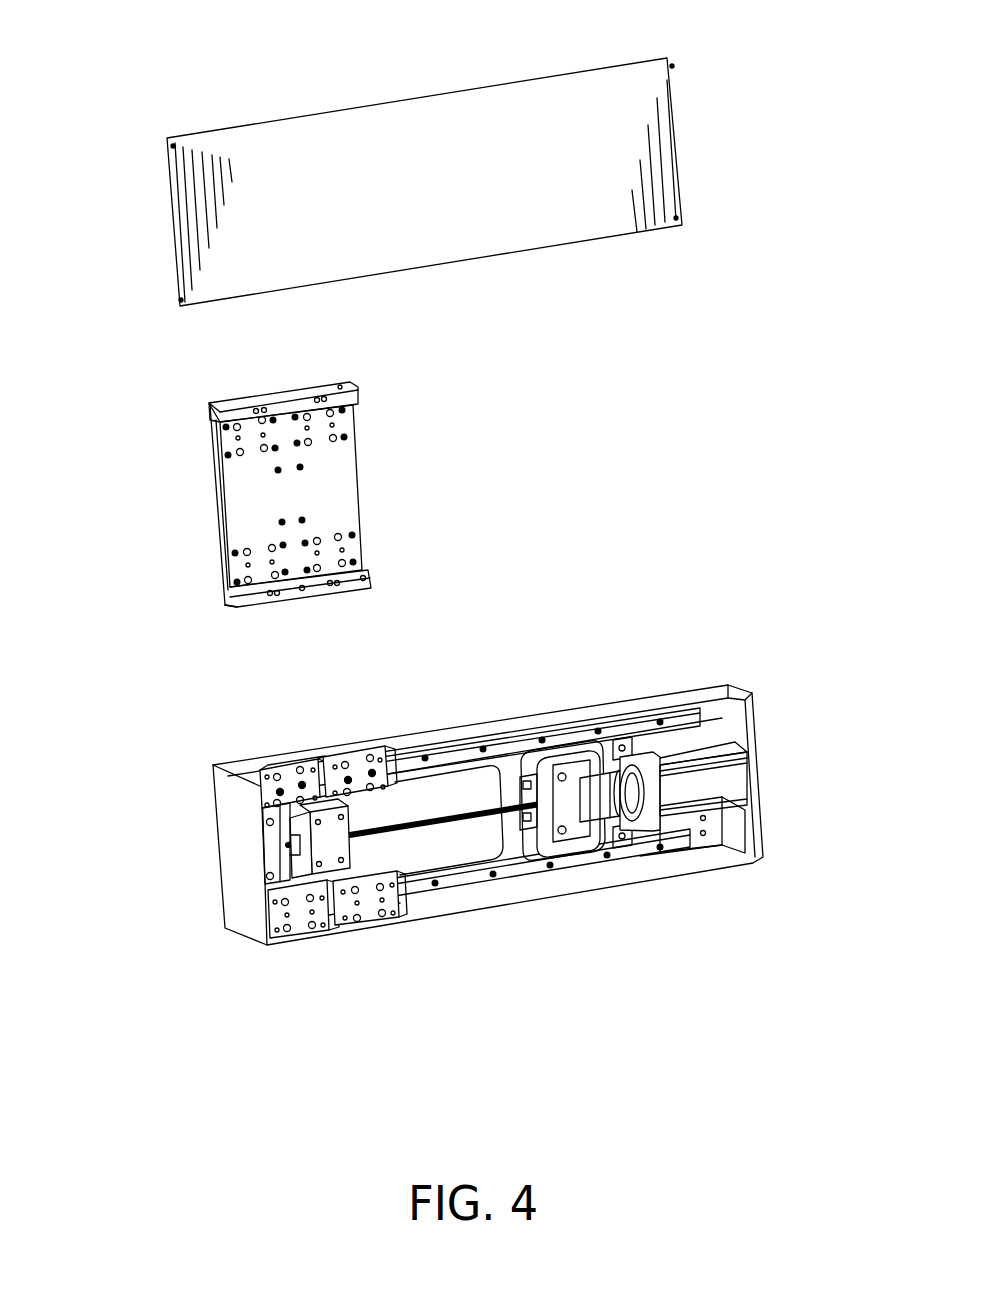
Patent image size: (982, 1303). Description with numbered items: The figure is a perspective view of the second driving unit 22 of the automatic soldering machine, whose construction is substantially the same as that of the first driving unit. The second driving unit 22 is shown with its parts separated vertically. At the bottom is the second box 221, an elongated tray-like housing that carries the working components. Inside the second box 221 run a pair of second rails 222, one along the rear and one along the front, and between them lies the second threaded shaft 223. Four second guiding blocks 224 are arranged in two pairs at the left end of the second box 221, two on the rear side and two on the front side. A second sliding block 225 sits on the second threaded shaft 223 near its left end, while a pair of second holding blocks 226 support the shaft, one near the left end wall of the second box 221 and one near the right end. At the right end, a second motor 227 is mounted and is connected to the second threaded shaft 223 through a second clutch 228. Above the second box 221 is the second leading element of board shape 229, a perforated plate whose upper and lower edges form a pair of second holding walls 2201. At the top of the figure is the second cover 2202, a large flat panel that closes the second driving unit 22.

The second driving unit 22 is at (92, 28).
The second cover 2202 is at (473, 220).
The second holding walls 2201 is at (340, 399).
The second leading element 229 is at (238, 517).
The second box 221 is at (232, 880).
The second rails 222 is at (468, 752).
The second threaded shaft 223 is at (502, 817).
The second guiding blocks 224 is at (287, 772).
The second sliding block 225 is at (340, 840).
The second holding blocks 226 is at (262, 823).
The second motor 227 is at (707, 780).
The second clutch 228 is at (598, 778).